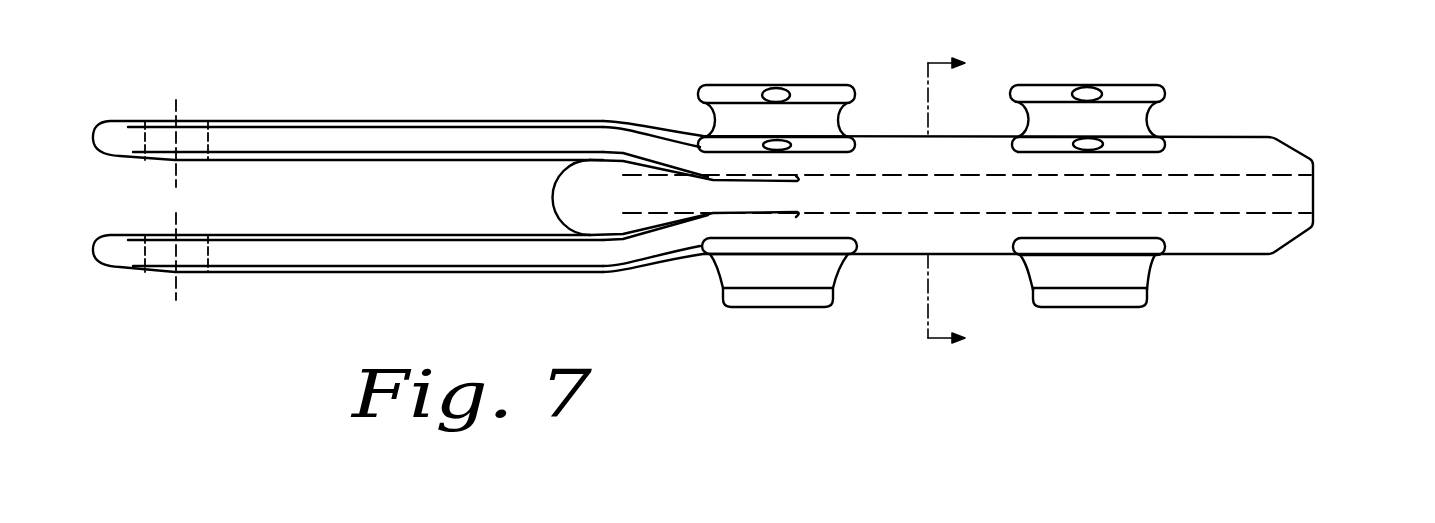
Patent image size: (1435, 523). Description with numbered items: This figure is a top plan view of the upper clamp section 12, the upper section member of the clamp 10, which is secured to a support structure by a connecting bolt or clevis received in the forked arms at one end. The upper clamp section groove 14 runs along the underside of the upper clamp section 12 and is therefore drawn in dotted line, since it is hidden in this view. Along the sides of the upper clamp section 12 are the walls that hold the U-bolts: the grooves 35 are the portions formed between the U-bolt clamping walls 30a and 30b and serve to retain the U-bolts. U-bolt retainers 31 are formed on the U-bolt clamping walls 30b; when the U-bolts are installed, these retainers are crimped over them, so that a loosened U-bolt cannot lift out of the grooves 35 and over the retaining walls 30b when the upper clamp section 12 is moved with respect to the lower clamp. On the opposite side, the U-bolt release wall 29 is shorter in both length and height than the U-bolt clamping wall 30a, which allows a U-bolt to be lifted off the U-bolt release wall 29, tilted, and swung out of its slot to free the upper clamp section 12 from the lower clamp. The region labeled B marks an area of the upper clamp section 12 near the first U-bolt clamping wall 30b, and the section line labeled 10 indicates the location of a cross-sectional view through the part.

The clamp 10 is at (959, 202).
The upper clamp section 12 is at (1273, 162).
The upper clamp section groove 14 is at (1290, 198).
The U-bolt release wall 29 is at (1087, 295).
The U-bolt clamping wall 30a is at (1150, 243).
The U-bolt clamping wall 30b is at (1027, 85).
The U-bolt retainer 31 is at (772, 90).
The groove 35 is at (1107, 118).
The region B is at (715, 118).